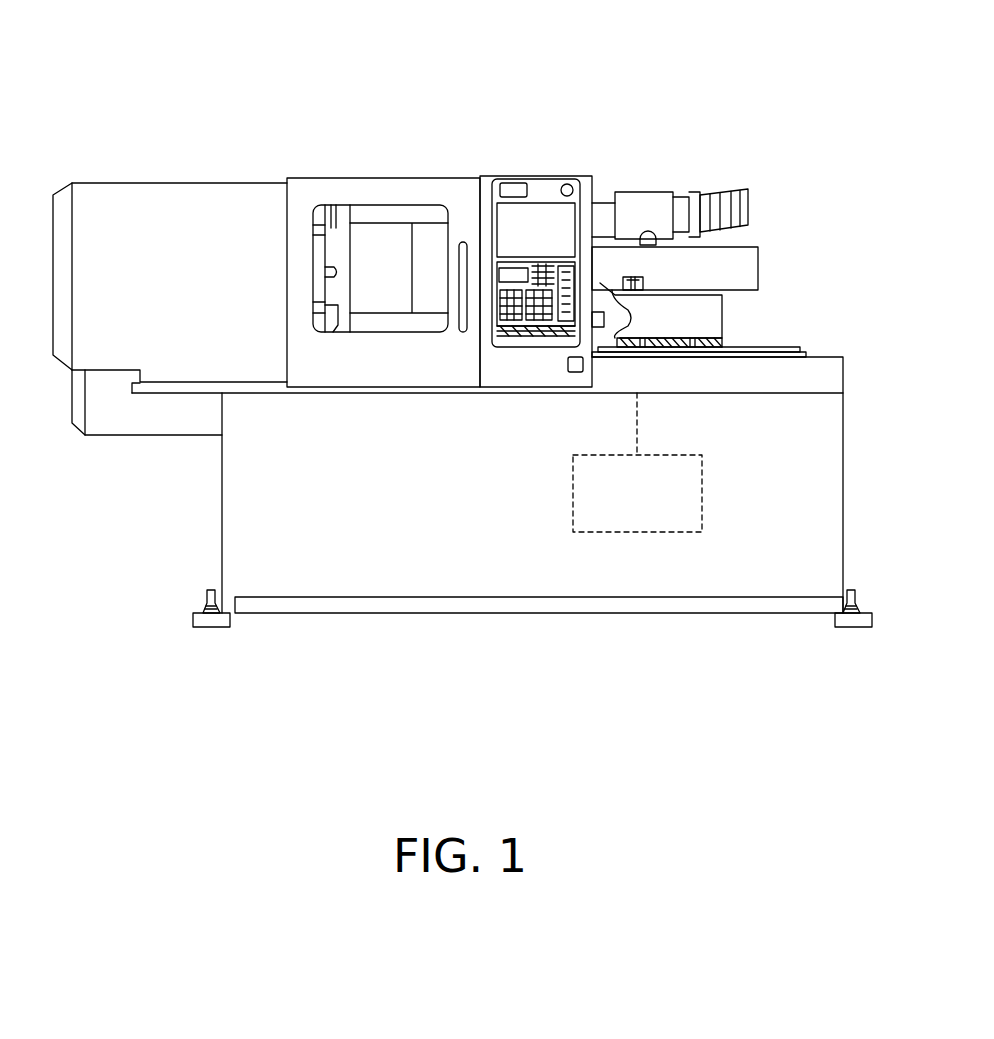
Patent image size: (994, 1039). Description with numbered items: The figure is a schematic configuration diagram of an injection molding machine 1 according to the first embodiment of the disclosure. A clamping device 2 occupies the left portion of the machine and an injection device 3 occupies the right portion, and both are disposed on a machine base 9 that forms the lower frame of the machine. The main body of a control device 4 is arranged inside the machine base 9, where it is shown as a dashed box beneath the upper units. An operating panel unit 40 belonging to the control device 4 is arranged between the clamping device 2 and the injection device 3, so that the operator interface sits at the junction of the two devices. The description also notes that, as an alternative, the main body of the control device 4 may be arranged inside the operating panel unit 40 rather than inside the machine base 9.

The injection molding machine 1 is at (497, 75).
The clamping device 2 is at (55, 150).
The injection device 3 is at (748, 150).
The control device 4 is at (608, 535).
The machine base 9 is at (832, 507).
The operating panel unit 40 is at (572, 375).